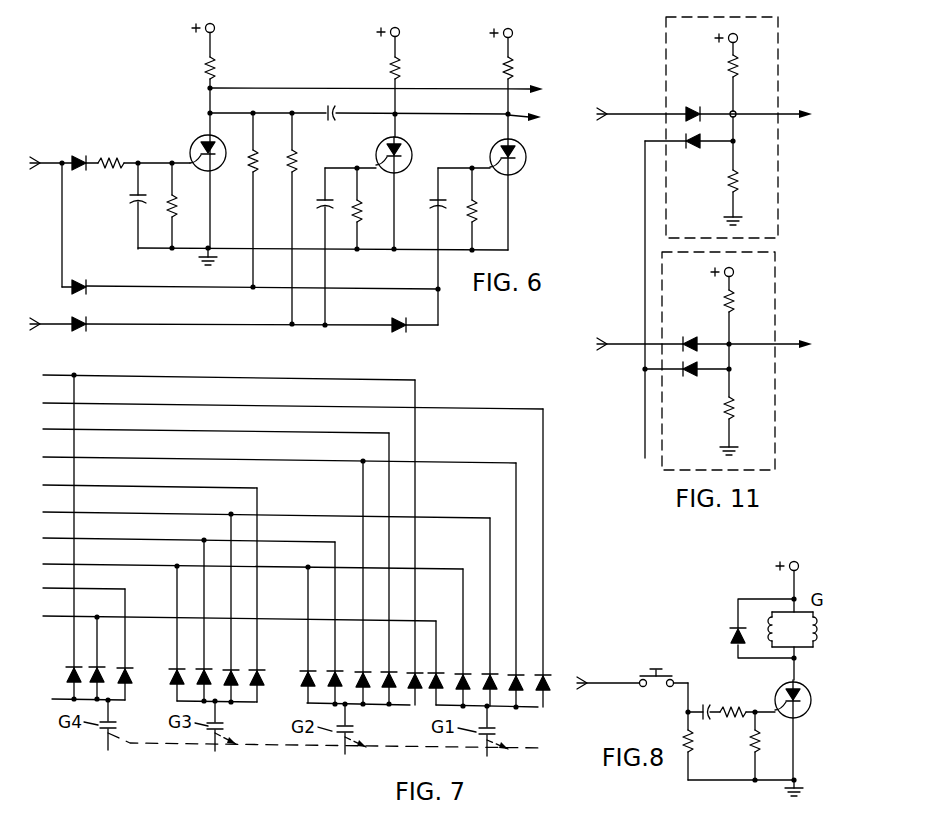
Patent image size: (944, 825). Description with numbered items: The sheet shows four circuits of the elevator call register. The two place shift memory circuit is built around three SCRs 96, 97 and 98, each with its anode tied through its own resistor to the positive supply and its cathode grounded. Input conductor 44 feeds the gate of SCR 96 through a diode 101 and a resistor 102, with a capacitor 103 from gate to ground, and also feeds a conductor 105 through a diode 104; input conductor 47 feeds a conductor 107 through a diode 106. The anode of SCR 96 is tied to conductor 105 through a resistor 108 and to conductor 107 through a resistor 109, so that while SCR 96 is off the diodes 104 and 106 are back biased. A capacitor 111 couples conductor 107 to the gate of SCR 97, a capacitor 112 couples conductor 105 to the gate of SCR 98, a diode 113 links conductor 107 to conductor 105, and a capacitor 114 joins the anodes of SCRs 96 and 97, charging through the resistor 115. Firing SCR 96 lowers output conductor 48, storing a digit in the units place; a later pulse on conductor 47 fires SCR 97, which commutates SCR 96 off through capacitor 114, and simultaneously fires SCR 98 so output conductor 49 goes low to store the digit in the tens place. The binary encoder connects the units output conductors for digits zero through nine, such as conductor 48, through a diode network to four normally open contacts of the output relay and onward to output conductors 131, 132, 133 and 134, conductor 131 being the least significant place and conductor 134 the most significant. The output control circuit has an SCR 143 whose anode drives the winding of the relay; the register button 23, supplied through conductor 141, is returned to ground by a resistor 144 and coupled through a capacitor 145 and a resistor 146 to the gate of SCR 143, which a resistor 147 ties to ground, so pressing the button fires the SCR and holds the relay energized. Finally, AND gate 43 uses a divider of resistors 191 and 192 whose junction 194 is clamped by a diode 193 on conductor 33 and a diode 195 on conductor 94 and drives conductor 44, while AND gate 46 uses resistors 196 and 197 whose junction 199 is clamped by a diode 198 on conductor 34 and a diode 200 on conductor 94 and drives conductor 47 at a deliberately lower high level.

In FIG. 6, the input conductor 44 is at (49, 162).
In FIG. 11, the input conductor 44 is at (790, 113).
In FIG. 6, the input conductor 47 is at (47, 321).
In FIG. 11, the input conductor 47 is at (786, 343).
In FIG. 6, the output conductor 48 is at (515, 88).
In FIG. 7, the output conductor 48 is at (66, 429).
In FIG. 6, the output conductor 49 is at (523, 122).
In FIG. 6, the SCR 96 is at (194, 143).
In FIG. 6, the SCR 97 is at (408, 140).
In FIG. 6, the SCR 98 is at (530, 158).
In FIG. 6, the diode 101 is at (83, 153).
In FIG. 6, the resistor 102 is at (110, 150).
In FIG. 6, the capacitor 103 is at (127, 197).
In FIG. 6, the diode 104 is at (80, 281).
In FIG. 6, the conductor 105 is at (195, 288).
In FIG. 6, the diode 106 is at (83, 319).
In FIG. 6, the conductor 107 is at (211, 323).
In FIG. 6, the resistor 108 is at (247, 158).
In FIG. 6, the resistor 109 is at (296, 170).
In FIG. 6, the capacitor 111 is at (318, 202).
In FIG. 6, the capacitor 112 is at (428, 204).
In FIG. 6, the diode 113 is at (392, 322).
In FIG. 6, the capacitor 114 is at (337, 103).
In FIG. 6, the resistor 115 is at (405, 73).
In FIG. 7, the output conductor 131 is at (491, 752).
In FIG. 7, the output conductor 132 is at (349, 750).
In FIG. 7, the output conductor 133 is at (219, 746).
In FIG. 7, the output conductor 134 is at (116, 745).
In FIG. 8, the register button 23 is at (650, 668).
In FIG. 8, the conductor 141 is at (598, 684).
In FIG. 8, the SCR 143 is at (778, 685).
In FIG. 8, the resistor 144 is at (685, 742).
In FIG. 8, the capacitor 145 is at (705, 705).
In FIG. 8, the resistor 146 is at (736, 710).
In FIG. 8, the resistor 147 is at (751, 737).
In FIG. 11, the conductor 33 is at (636, 113).
In FIG. 11, the conductor 34 is at (625, 343).
In FIG. 11, the AND gate 43 is at (780, 46).
In FIG. 11, the AND gate 46 is at (778, 285).
In FIG. 11, the conductor 94 is at (643, 421).
In FIG. 11, the resistor 191 is at (726, 66).
In FIG. 11, the resistor 192 is at (727, 180).
In FIG. 11, the diode 193 is at (695, 108).
In FIG. 11, the junction 194 is at (738, 111).
In FIG. 11, the diode 195 is at (696, 145).
In FIG. 11, the resistor 196 is at (733, 301).
In FIG. 11, the resistor 197 is at (732, 414).
In FIG. 11, the diode 198 is at (690, 337).
In FIG. 11, the junction 199 is at (734, 342).
In FIG. 11, the diode 200 is at (696, 377).